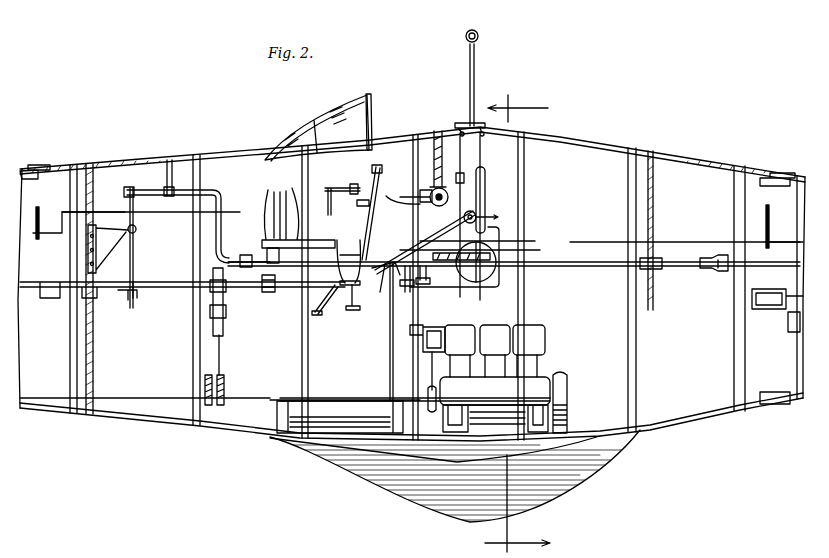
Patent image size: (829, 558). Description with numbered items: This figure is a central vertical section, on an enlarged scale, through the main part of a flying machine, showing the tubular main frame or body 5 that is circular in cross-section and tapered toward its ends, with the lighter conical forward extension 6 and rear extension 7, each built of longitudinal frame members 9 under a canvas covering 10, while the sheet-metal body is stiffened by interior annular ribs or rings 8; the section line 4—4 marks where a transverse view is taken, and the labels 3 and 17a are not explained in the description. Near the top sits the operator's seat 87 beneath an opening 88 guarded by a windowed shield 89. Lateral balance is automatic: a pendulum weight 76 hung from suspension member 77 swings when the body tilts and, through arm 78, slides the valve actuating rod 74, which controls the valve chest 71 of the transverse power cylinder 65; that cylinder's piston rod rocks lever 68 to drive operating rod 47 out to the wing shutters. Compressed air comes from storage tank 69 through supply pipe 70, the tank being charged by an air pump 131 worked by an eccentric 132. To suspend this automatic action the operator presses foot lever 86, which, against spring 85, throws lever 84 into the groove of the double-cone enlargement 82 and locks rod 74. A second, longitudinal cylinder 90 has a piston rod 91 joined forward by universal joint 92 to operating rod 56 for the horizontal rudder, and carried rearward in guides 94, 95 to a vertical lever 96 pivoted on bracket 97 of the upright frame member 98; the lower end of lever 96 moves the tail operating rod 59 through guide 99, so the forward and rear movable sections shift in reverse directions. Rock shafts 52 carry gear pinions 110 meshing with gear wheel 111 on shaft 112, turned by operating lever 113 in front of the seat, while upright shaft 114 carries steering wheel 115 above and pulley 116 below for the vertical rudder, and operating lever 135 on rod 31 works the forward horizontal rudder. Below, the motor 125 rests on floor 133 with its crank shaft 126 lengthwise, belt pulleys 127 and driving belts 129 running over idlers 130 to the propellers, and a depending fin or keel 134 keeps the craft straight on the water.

The indicator 3 is at (416, 221).
The section line 4— 4 is at (517, 316).
The main frame or body 5 is at (135, 159).
The forward extension 6 is at (795, 175).
The rear extension 7 is at (24, 165).
The annular stiffening ribs or rings 8 is at (72, 362).
The longitudinal frame members 9 is at (798, 186).
The covering 10 is at (803, 338).
The mast 17a is at (479, 40).
The operating rod 31 is at (688, 242).
The operating rod 47 is at (470, 162).
The rock shaft 52 is at (446, 185).
The endwise movable operating rod 56 is at (777, 275).
The operating rod 59 is at (128, 300).
The power cylinder 65 is at (510, 250).
The rocking lever 68 is at (484, 168).
The storage tank 69 is at (355, 401).
The supply pipe 70 is at (500, 245).
The valve chest 71 is at (500, 256).
The valve actuating rod 74 is at (470, 222).
The shifting weight 76 is at (491, 200).
The suspension member 77 is at (460, 125).
The transversely extending arm 78 is at (500, 235).
The enlargement 82 is at (476, 214).
The lever 84 is at (428, 270).
The spring 85 is at (410, 280).
The foot-actuated lever 86 is at (322, 300).
The seat 87 is at (274, 248).
The opening 88 is at (266, 153).
The shield 89 is at (370, 95).
The cylinder 90 is at (385, 276).
The piston rod 91 is at (222, 262).
The universal joint 92 is at (714, 270).
The guide 94 is at (268, 292).
The guide 95 is at (170, 195).
The lever 96 is at (134, 248).
The bracket 97 is at (122, 232).
The upright frame member 98 is at (124, 189).
The guide 99 is at (72, 296).
The gear pinion 110 is at (405, 193).
The gear wheel 111 is at (430, 192).
The shaft 112 is at (421, 192).
The operating lever 113 is at (320, 196).
The upright shaft 114 is at (338, 272).
The steering wheel 115 is at (340, 187).
The wheel or pulley 116 is at (352, 309).
The engine or main motor 125 is at (549, 361).
The crank shaft 126 is at (320, 400).
The belt pulley 127 is at (205, 385).
The driving belt 129 is at (220, 372).
The guide pulley or idler 130 is at (210, 302).
The air pump 131 is at (441, 324).
The eccentric 132 is at (437, 398).
The floor 133 is at (567, 420).
The fin or keel 134 is at (465, 476).
The operating lever 135 is at (376, 162).